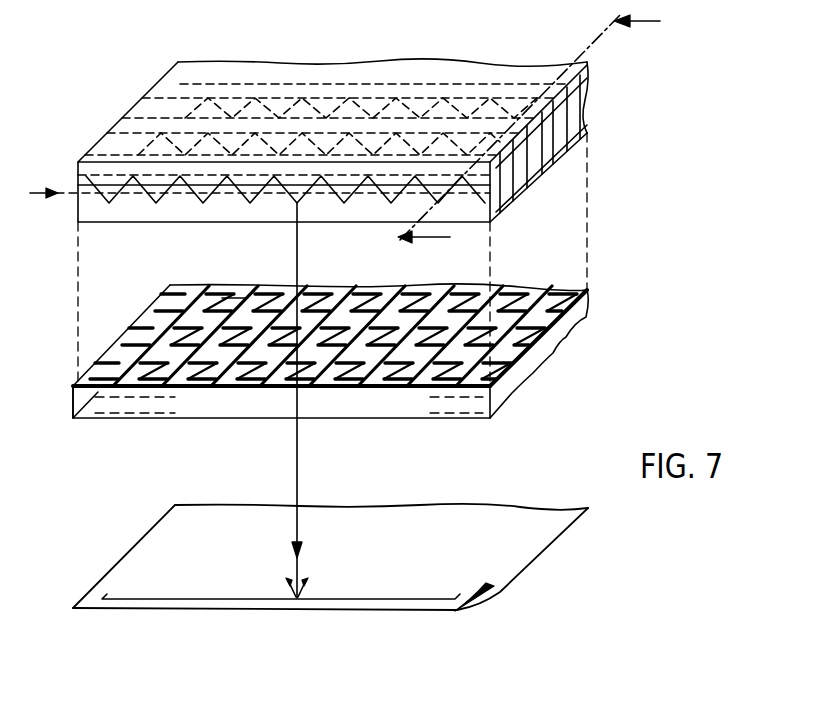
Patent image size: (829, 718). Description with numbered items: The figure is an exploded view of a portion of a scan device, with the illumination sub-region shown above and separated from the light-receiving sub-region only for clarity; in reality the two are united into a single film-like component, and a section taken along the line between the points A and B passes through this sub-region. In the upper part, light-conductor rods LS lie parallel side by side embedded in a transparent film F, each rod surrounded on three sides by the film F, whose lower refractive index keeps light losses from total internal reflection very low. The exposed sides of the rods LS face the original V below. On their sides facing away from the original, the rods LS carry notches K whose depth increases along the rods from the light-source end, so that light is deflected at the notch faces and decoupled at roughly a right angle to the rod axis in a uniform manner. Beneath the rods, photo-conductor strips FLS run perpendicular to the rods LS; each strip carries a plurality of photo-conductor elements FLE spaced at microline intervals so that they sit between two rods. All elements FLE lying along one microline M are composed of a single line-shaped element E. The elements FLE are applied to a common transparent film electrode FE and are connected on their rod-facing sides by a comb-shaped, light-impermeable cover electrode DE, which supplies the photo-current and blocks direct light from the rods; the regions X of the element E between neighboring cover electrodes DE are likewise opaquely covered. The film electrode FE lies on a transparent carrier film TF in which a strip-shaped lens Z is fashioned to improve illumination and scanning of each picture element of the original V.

The transparent film F is at (77, 164).
The notches K is at (345, 203).
The light-conductor rods LS is at (523, 182).
The section line end A is at (500, 133).
The section line end B is at (622, 22).
The photo-conductor strips FLS is at (330, 319).
The cover electrode DE is at (186, 291).
The regions between cover electrodes X is at (224, 293).
The photo-conductor elements FLE is at (167, 295).
The film electrode FE is at (73, 387).
The strip-shaped lens Z is at (563, 343).
The line-shaped element E is at (500, 391).
The carrier film TF is at (382, 410).
The microline M is at (185, 598).
The original V is at (523, 562).